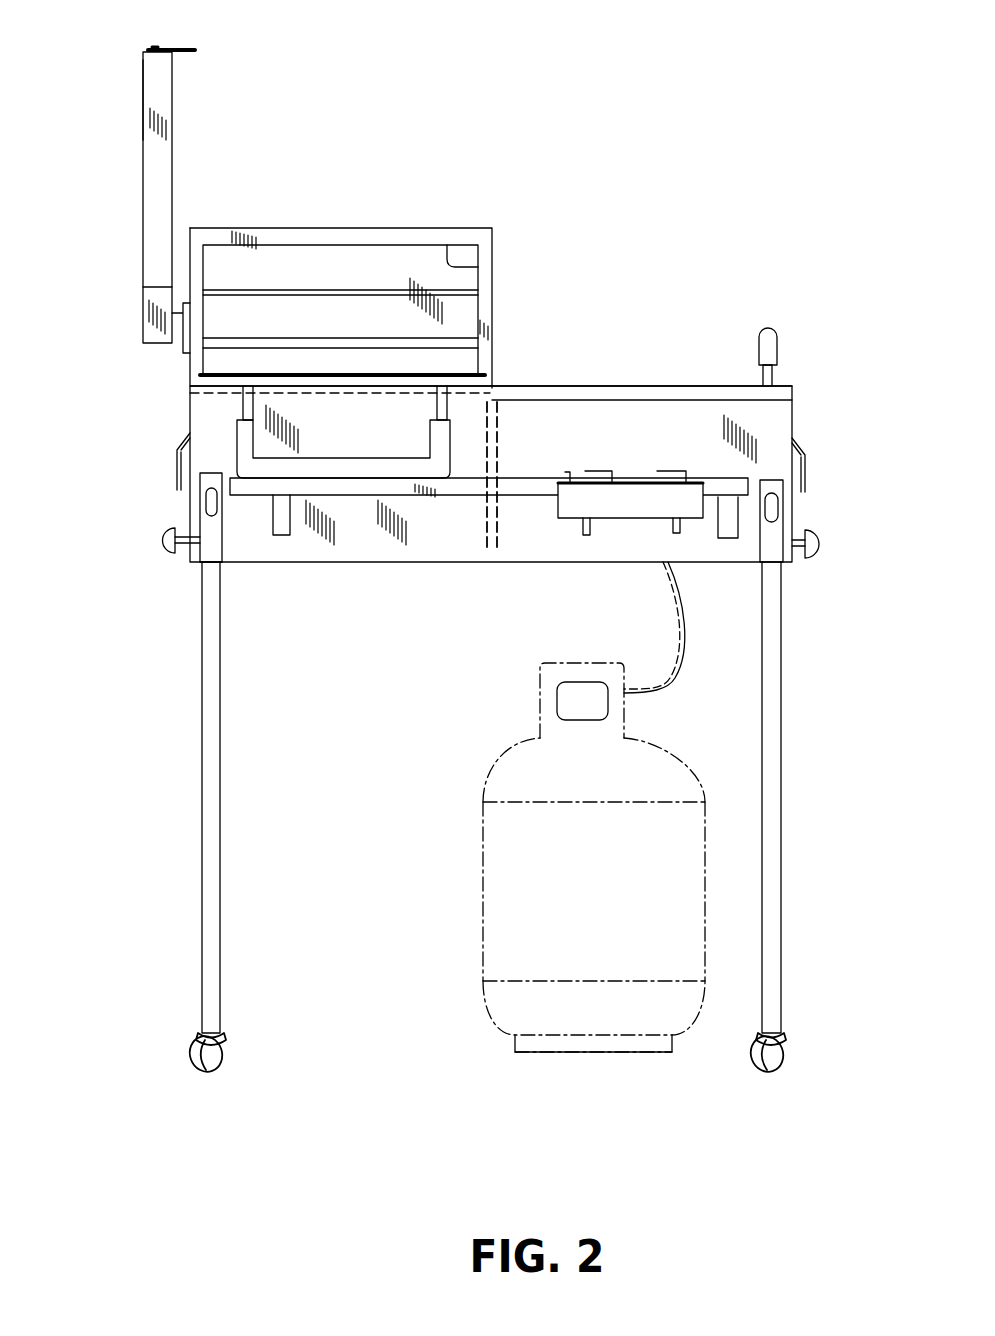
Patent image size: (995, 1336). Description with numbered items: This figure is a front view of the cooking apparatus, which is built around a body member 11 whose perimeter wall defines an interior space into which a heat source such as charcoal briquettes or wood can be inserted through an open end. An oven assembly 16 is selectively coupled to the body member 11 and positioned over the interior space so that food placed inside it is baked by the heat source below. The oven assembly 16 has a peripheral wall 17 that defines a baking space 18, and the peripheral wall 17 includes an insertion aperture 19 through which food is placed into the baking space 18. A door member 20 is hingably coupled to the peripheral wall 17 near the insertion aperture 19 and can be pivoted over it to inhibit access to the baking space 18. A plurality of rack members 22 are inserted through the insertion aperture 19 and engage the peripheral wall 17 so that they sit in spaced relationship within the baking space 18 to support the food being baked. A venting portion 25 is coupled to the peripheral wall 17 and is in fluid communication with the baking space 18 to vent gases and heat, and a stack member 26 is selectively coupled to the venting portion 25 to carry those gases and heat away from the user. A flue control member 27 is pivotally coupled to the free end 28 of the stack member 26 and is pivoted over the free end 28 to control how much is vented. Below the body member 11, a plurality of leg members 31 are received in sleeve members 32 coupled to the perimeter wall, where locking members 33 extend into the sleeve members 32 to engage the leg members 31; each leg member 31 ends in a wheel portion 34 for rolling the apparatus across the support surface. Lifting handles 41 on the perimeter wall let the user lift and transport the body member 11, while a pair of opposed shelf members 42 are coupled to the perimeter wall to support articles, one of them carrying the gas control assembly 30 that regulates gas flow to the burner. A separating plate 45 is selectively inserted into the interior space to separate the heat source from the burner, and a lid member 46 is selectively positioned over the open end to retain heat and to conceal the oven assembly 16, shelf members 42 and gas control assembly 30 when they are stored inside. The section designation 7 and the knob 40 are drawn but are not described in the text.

The body member 11 is at (793, 415).
The oven assembly 16 is at (334, 195).
The peripheral wall 17 is at (493, 232).
The baking space 18 is at (407, 263).
The insertion aperture 19 is at (479, 262).
The door member 20 is at (440, 377).
The rack members 22 is at (240, 290).
The venting portion 25 is at (145, 328).
The stack member 26 is at (152, 188).
The flue control member 27 is at (183, 48).
The free end 28 is at (157, 80).
The gas control assembly 30 is at (558, 548).
The leg members 31 is at (220, 870).
The sleeve members 32 is at (212, 545).
The locking members 33 is at (212, 503).
The wheel portion 34 is at (195, 1073).
The locking knobs 40 is at (165, 545).
The lifting handles 41 is at (177, 440).
The shelf members 42 is at (467, 488).
The separating plate 45 is at (497, 460).
The lid member 46 is at (695, 388).
The section line 7 is at (160, 488).